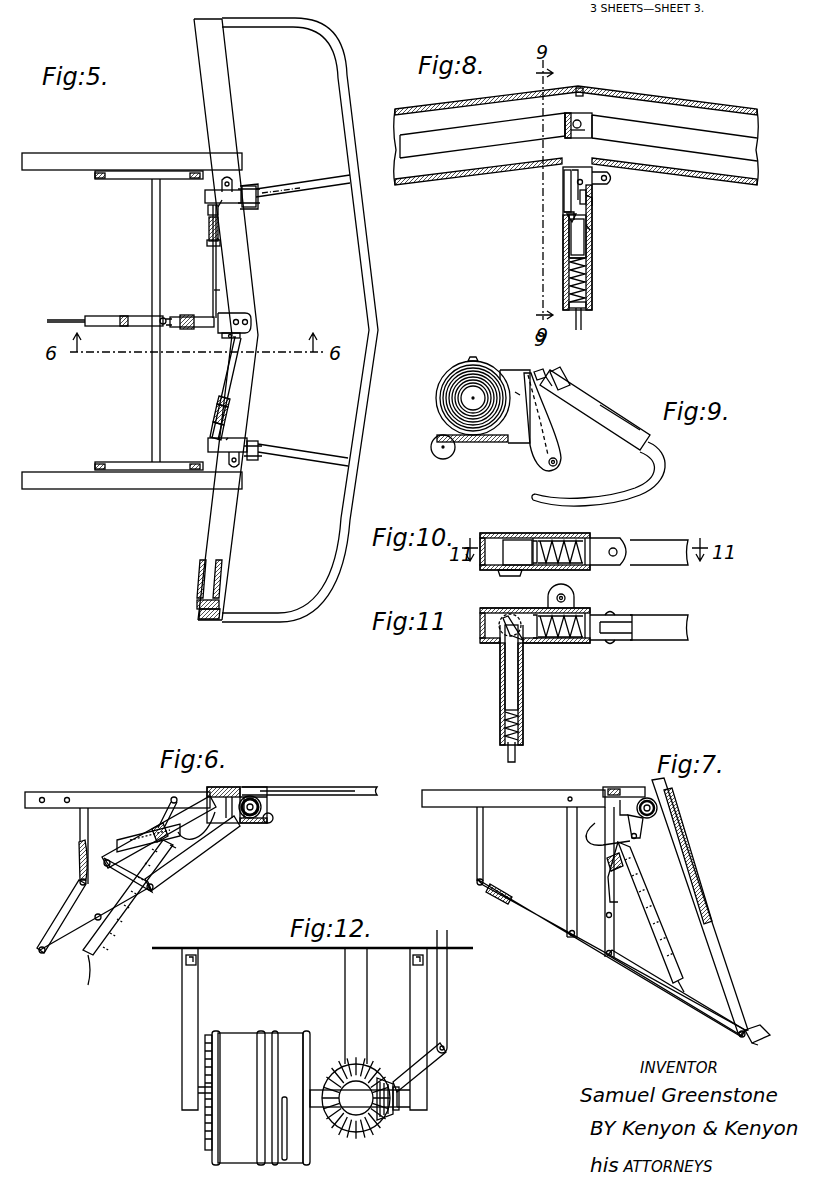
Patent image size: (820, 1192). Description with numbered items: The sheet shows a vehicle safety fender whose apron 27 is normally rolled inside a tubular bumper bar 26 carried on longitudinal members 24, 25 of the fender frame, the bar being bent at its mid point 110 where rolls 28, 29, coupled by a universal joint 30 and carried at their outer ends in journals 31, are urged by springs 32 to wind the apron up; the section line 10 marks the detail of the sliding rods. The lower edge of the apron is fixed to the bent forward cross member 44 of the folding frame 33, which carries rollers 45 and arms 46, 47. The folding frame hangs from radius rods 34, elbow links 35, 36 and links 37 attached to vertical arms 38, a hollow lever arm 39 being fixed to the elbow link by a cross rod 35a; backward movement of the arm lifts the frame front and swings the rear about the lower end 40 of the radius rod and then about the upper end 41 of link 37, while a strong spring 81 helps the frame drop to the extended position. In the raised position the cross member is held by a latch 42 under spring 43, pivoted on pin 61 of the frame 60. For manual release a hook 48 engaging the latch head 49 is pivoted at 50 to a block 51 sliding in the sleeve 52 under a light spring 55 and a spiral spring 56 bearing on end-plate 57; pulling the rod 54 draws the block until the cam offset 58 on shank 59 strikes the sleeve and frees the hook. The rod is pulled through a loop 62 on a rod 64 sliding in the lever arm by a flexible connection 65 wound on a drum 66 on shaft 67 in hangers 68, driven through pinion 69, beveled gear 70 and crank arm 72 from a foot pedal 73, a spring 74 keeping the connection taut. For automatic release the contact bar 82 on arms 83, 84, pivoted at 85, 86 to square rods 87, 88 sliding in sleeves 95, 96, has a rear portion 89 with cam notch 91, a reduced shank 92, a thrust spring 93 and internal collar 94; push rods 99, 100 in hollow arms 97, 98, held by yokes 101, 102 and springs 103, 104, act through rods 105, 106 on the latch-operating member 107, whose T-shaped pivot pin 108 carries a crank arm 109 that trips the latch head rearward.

In FIG. 5, the section line / bracket 10 is at (195, 194).
In FIG. 5, the longitudinal member 24 is at (99, 480).
In FIG. 6, the longitudinal member 24 is at (60, 797).
In FIG. 7, the longitudinal member 24 is at (462, 800).
In FIG. 5, the longitudinal member 25 is at (86, 162).
In FIG. 5, the bumper bar 26 is at (224, 79).
In FIG. 9, the bumper bar 26 is at (441, 386).
In FIG. 6, the bumper bar 26 is at (265, 810).
In FIG. 5, the apron 27 is at (215, 582).
In FIG. 9, the apron 27 is at (446, 418).
In FIG. 6, the apron 27 is at (258, 818).
In FIG. 7, the apron 27 is at (724, 957).
In FIG. 8, the roll 28 is at (447, 145).
In FIG. 8, the roll 29 is at (640, 132).
In FIG. 7, the roll 29 is at (661, 809).
In FIG. 8, the universal joint 30 is at (584, 121).
In FIG. 5, the journals 31 is at (198, 606).
In FIG. 5, the springs 32 is at (216, 620).
In FIG. 6, the folding frame 33 is at (190, 870).
In FIG. 7, the folding frame 33 is at (672, 996).
In FIG. 6, the radius rod 34 is at (178, 822).
In FIG. 7, the radius rod 34 is at (570, 852).
In FIG. 5, the elbow link 35 is at (141, 180).
In FIG. 6, the elbow link 35 is at (152, 830).
In FIG. 7, the elbow link 35 is at (607, 847).
In FIG. 5, the cross rod 35a is at (156, 352).
In FIG. 6, the cross rod 35a is at (152, 840).
In FIG. 7, the cross rod 35a is at (611, 866).
In FIG. 6, the elbow link 36 is at (120, 876).
In FIG. 7, the elbow link 36 is at (604, 928).
In FIG. 6, the link 37 is at (54, 922).
In FIG. 7, the link 37 is at (526, 912).
In FIG. 6, the vertical arm 38 is at (79, 823).
In FIG. 7, the vertical arm 38 is at (486, 826).
In FIG. 5, the hollow lever arm 39 is at (126, 316).
In FIG. 6, the hollow lever arm 39 is at (167, 848).
In FIG. 7, the hollow lever arm 39 is at (612, 884).
In FIG. 6, the lower end of radius rod 40 is at (90, 946).
In FIG. 7, the lower end of radius rod 40 is at (571, 940).
In FIG. 6, the upper end of link 41 is at (80, 883).
In FIG. 7, the upper end of link 41 is at (478, 886).
In FIG. 9, the latch 42 is at (531, 452).
In FIG. 6, the latch 42 is at (230, 820).
In FIG. 7, the latch 42 is at (643, 838).
In FIG. 9, the spring 43 is at (556, 447).
In FIG. 9, the forward cross member 44 is at (488, 443).
In FIG. 6, the forward cross member 44 is at (252, 824).
In FIG. 7, the forward cross member 44 is at (739, 1037).
In FIG. 9, the rollers 45 is at (445, 459).
In FIG. 6, the rollers 45 is at (273, 821).
In FIG. 7, the rollers 45 is at (755, 1043).
In FIG. 5, the arm 46 is at (254, 455).
In FIG. 5, the arm 47 is at (246, 190).
In FIG. 6, the arm 47 is at (270, 806).
In FIG. 7, the arm 47 is at (757, 1027).
In FIG. 8, the hook 48 is at (583, 187).
In FIG. 9, the hook 48 is at (538, 374).
In FIG. 8, the latch head 49 is at (565, 195).
In FIG. 9, the latch head 49 is at (576, 400).
In FIG. 8, the pivot 50 is at (588, 220).
In FIG. 9, the pivot 50 is at (566, 388).
In FIG. 8, the block 51 is at (585, 242).
In FIG. 5, the sleeve 52 is at (202, 327).
In FIG. 8, the sleeve 52 is at (565, 268).
In FIG. 9, the sleeve 52 is at (616, 421).
In FIG. 6, the sleeve 52 is at (190, 836).
In FIG. 7, the sleeve 52 is at (592, 822).
In FIG. 5, the rod 54 is at (211, 312).
In FIG. 8, the rod 54 is at (584, 324).
In FIG. 9, the rod 54 is at (640, 486).
In FIG. 8, the light spring 55 is at (587, 200).
In FIG. 8, the spiral spring 56 is at (592, 272).
In FIG. 8, the end-plate 57 is at (590, 305).
In FIG. 8, the cam offset 58 is at (567, 220).
In FIG. 8, the shank 59 is at (592, 209).
In FIG. 5, the frame 60 is at (251, 316).
In FIG. 8, the frame 60 is at (590, 232).
In FIG. 9, the frame 60 is at (551, 383).
In FIG. 8, the pin 61 is at (566, 208).
In FIG. 9, the pin 61 is at (558, 465).
In FIG. 6, the loop 62 is at (206, 850).
In FIG. 7, the loop 62 is at (648, 836).
In FIG. 6, the rod 64 is at (178, 850).
In FIG. 5, the flexible connection 65 is at (58, 318).
In FIG. 6, the flexible connection 65 is at (87, 975).
In FIG. 7, the flexible connection 65 is at (684, 986).
In FIG. 12, the drum 66 is at (290, 1046).
In FIG. 12, the shaft 67 is at (320, 1100).
In FIG. 12, the hangers 68 is at (182, 1012).
In FIG. 12, the pinion 69 is at (390, 1117).
In FIG. 12, the beveled gear 70 is at (358, 1133).
In FIG. 12, the crank arm 72 is at (434, 1058).
In FIG. 12, the foot pedal 73 is at (448, 990).
In FIG. 12, the spring 74 is at (207, 1143).
In FIG. 6, the spring 81 is at (79, 866).
In FIG. 7, the spring 81 is at (502, 887).
In FIG. 5, the contact bar 82 is at (374, 283).
In FIG. 5, the arm 83 is at (300, 462).
In FIG. 5, the arm 84 is at (312, 185).
In FIG. 10, the arm 84 is at (665, 563).
In FIG. 11, the arm 84 is at (659, 627).
In FIG. 6, the arm 84 is at (318, 789).
In FIG. 5, the pivot 85 is at (247, 442).
In FIG. 5, the pivot 86 is at (252, 205).
In FIG. 6, the pivot 86 is at (242, 792).
In FIG. 5, the square rod 87 is at (241, 462).
In FIG. 10, the square rod 87 is at (606, 563).
In FIG. 11, the square rod 87 is at (611, 628).
In FIG. 5, the square rod 88 is at (233, 182).
In FIG. 10, the rear portion 89 is at (505, 576).
In FIG. 10, the cam-shaped notch 91 is at (513, 562).
In FIG. 11, the cam-shaped notch 91 is at (511, 627).
In FIG. 10, the shank 92 is at (535, 551).
In FIG. 11, the shank 92 is at (578, 645).
In FIG. 10, the thrust spring 93 is at (570, 563).
In FIG. 11, the thrust spring 93 is at (561, 645).
In FIG. 10, the internal collar 94 is at (536, 561).
In FIG. 11, the internal collar 94 is at (538, 645).
In FIG. 5, the sleeve 95 is at (228, 440).
In FIG. 11, the sleeve 95 is at (498, 645).
In FIG. 5, the sleeve 96 is at (226, 202).
In FIG. 5, the hollow arm 97 is at (211, 430).
In FIG. 11, the hollow arm 97 is at (500, 688).
In FIG. 5, the hollow arm 98 is at (208, 212).
In FIG. 5, the push rod 99 is at (214, 410).
In FIG. 11, the push rod 99 is at (520, 700).
In FIG. 5, the push rod 100 is at (214, 246).
In FIG. 5, the yoke 101 is at (219, 397).
In FIG. 11, the yoke 101 is at (508, 745).
In FIG. 5, the yoke 102 is at (210, 227).
In FIG. 5, the spring 103 is at (233, 357).
In FIG. 5, the spring 104 is at (220, 240).
In FIG. 5, the rod 105 is at (238, 360).
In FIG. 5, the rod 106 is at (217, 294).
In FIG. 5, the latch-operating member 107 is at (242, 336).
In FIG. 8, the T-shaped pivot pin 108 is at (614, 179).
In FIG. 8, the crank arm 109 is at (566, 177).
In FIG. 9, the crank arm 109 is at (519, 393).
In FIG. 5, the mid point 110 is at (255, 323).
In FIG. 8, the mid point 110 is at (583, 91).